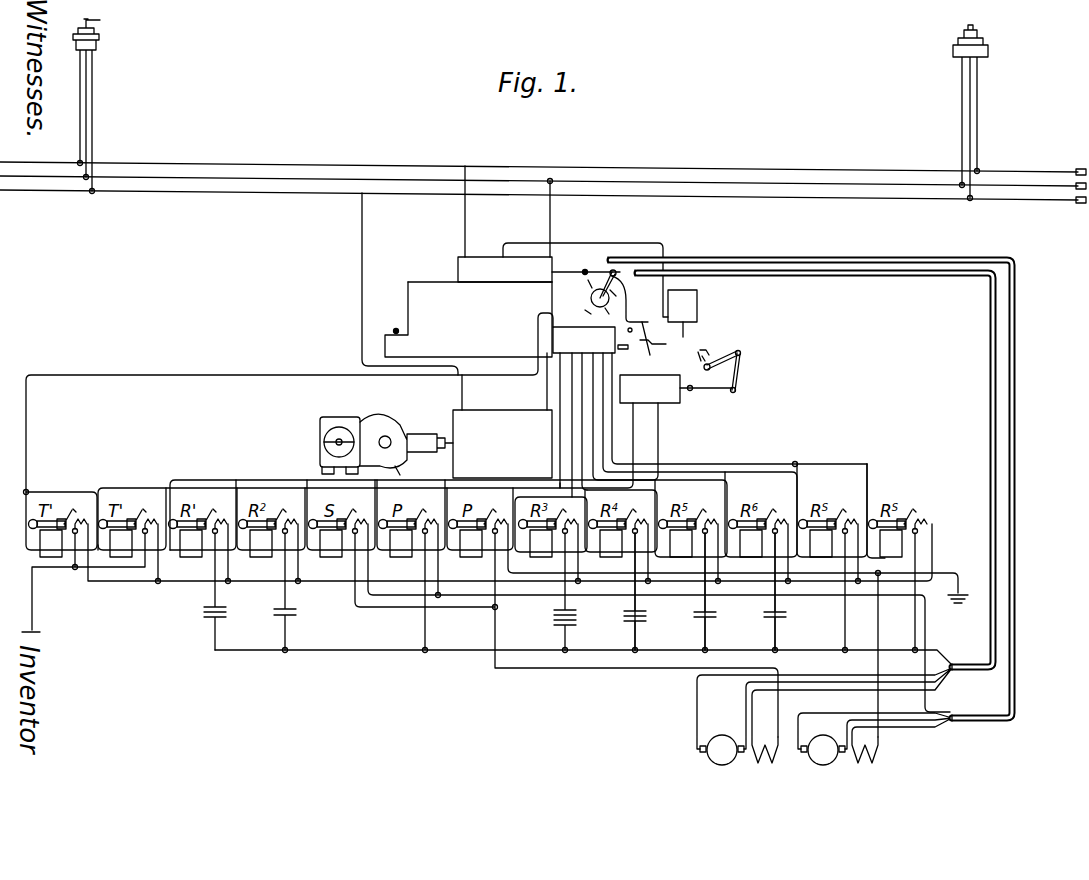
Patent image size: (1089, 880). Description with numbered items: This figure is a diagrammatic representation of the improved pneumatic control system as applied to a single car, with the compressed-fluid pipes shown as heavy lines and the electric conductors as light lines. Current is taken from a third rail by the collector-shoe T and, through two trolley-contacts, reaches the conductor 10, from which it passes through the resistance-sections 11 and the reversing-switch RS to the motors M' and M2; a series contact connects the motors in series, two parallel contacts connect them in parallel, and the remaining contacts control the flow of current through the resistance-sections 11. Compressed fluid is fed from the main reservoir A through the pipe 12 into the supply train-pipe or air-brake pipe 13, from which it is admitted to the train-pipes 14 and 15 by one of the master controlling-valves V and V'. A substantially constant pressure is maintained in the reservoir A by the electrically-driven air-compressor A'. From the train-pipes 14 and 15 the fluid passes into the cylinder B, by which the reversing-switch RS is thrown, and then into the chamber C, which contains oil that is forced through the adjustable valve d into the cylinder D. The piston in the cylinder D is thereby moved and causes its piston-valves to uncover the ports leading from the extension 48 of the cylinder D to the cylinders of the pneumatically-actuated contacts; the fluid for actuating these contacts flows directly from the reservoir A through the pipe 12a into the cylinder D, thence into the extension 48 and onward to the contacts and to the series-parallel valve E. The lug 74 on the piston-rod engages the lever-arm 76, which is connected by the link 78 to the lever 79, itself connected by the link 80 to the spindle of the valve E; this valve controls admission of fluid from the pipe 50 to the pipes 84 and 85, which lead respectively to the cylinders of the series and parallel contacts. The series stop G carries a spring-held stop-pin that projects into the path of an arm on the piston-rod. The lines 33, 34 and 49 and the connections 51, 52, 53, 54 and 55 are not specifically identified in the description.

The conductor 10 is at (188, 582).
The resistance-sections 11 is at (208, 621).
The pipe 12 is at (362, 334).
The pipe 12a is at (547, 397).
The supply train-pipe 13 is at (227, 194).
The train-pipe 14 is at (190, 165).
The train-pipe 15 is at (208, 180).
The conductor to controller 33 is at (465, 216).
The conductor to controller 34 is at (551, 222).
The extension of cylinder D 48 is at (584, 340).
The conductor 49 is at (158, 375).
The pipe 50 is at (561, 420).
The conductor 51 is at (536, 428).
The conductor 52 is at (572, 428).
The conductor 53 is at (607, 428).
The conductor 54 is at (642, 425).
The conductor 55 is at (711, 425).
The lug 74 is at (657, 346).
The lever-arm 76 is at (709, 351).
The link 78 is at (738, 350).
The lever 79 is at (740, 380).
The link 80 is at (716, 391).
The pipe 84 is at (633, 433).
The pipe 85 is at (668, 433).
The main reservoir A is at (502, 426).
The electrically-driven air-compressor A' is at (386, 437).
The cylinder B is at (476, 262).
The chamber C is at (429, 284).
The cylinder D is at (468, 319).
The adjustable valve d is at (392, 328).
The series-parallel valve E is at (674, 395).
The series stop G is at (697, 302).
The reversing-switch RS is at (615, 301).
The trolley or collector-shoe T is at (34, 626).
The master controlling-valve V is at (99, 106).
The master controlling-valve V' is at (983, 113).
The motor M' is at (824, 727).
The motor M2 is at (875, 749).